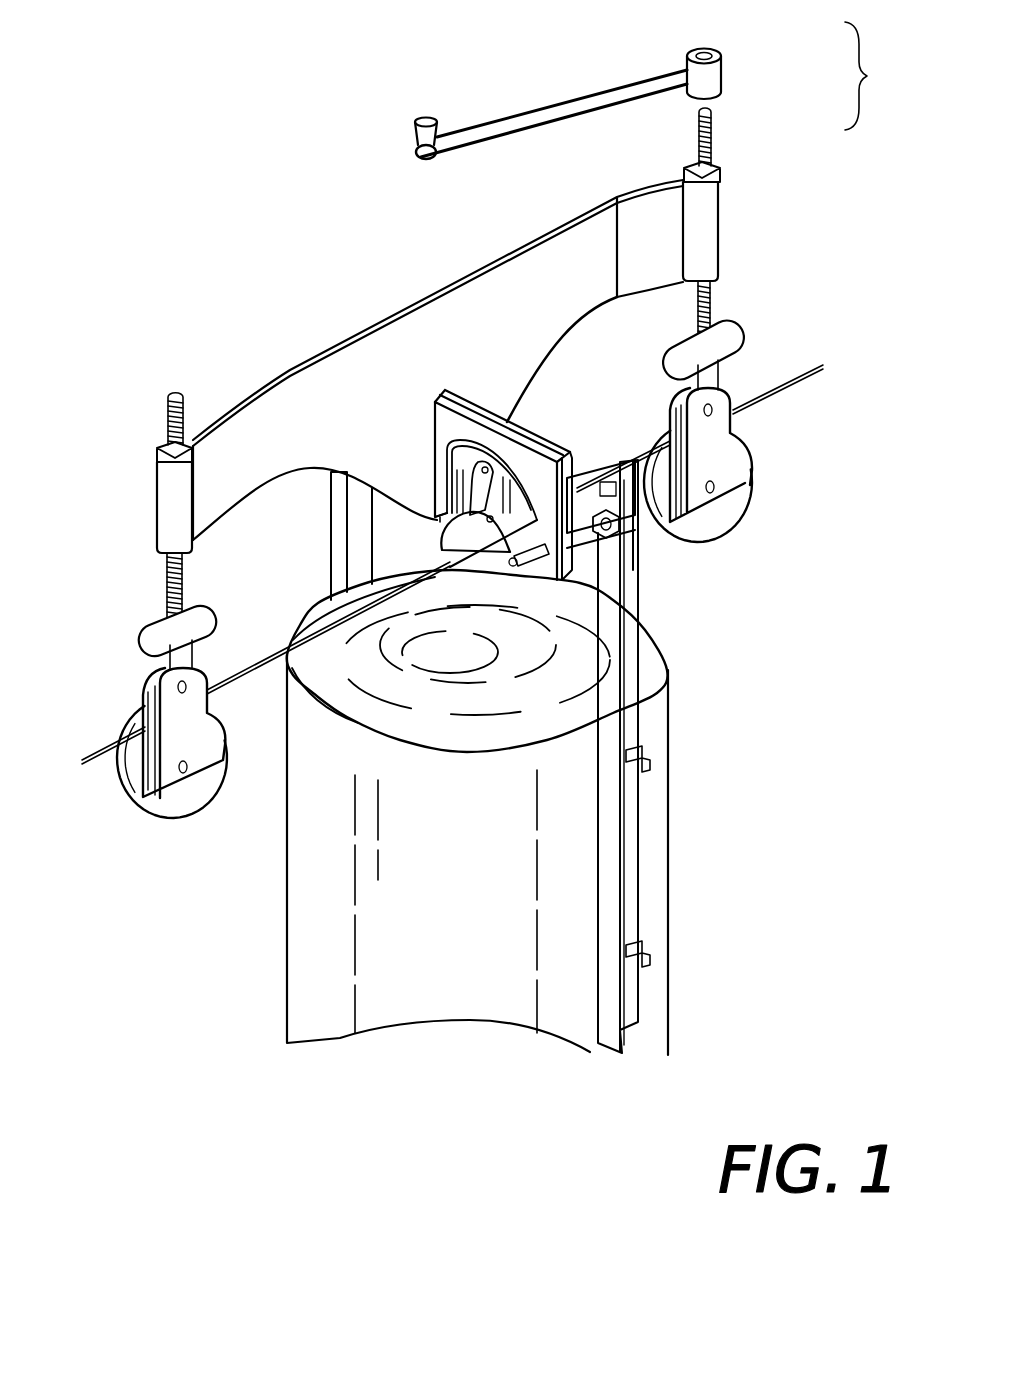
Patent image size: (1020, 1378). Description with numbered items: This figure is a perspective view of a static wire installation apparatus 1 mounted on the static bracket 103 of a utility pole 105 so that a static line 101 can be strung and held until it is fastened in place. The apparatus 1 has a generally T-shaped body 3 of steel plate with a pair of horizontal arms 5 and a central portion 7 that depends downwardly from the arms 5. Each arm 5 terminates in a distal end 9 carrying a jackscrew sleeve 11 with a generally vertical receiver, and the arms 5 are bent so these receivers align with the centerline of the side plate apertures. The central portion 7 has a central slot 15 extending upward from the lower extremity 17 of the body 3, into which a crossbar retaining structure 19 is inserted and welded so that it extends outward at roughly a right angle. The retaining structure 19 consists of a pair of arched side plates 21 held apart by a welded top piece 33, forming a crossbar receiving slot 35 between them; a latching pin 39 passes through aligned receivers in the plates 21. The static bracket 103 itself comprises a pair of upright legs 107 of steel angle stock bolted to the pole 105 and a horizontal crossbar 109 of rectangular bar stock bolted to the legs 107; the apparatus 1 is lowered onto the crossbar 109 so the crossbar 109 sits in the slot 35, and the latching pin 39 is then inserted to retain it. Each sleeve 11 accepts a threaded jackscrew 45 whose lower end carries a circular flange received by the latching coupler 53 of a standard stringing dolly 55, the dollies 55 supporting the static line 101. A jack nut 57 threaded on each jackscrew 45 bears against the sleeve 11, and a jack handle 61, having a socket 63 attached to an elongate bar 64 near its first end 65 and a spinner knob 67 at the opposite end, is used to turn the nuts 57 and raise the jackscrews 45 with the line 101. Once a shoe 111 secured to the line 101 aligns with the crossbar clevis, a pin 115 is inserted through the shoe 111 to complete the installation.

The static wire installation apparatus 1 is at (740, 292).
The body 3 is at (420, 300).
The horizontal arms 5 is at (660, 288).
The central portion 7 is at (558, 345).
The distal end 9 is at (683, 192).
The jackscrew sleeve 11 is at (718, 215).
The central slot 15 is at (437, 478).
The lower extremity 17 is at (437, 525).
The crossbar retaining structure 19 is at (552, 422).
The side plates 21 is at (462, 392).
The top piece 33 is at (558, 455).
The crossbar receiving slot 35 is at (620, 578).
The latching pin 39 is at (512, 565).
The threaded jackscrew 45 is at (711, 112).
The latching coupler 53 is at (740, 330).
The stringing dolly 55 is at (752, 462).
The jack nut 57 is at (720, 172).
The jack handle 61 is at (508, 68).
The socket 63 is at (722, 55).
The elongate bar 64 is at (555, 100).
The first end 65 is at (680, 70).
The spinner knob 67 is at (415, 122).
The static line 101 is at (826, 375).
The static bracket 103 is at (634, 605).
The utility pole 105 is at (285, 916).
The upright legs 107 is at (330, 520).
The horizontal crossbar 109 is at (640, 553).
The shoe 111 is at (478, 570).
The pin 115 is at (500, 523).